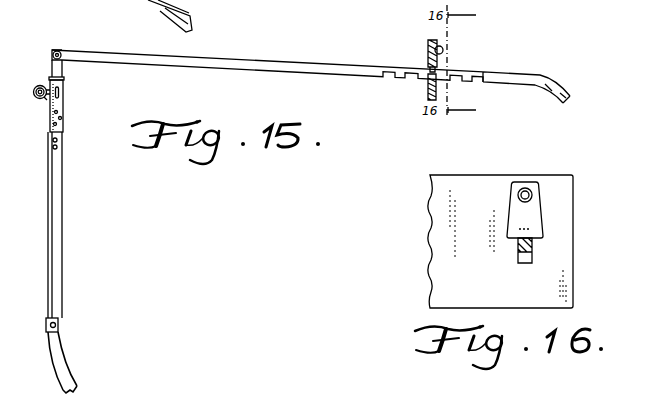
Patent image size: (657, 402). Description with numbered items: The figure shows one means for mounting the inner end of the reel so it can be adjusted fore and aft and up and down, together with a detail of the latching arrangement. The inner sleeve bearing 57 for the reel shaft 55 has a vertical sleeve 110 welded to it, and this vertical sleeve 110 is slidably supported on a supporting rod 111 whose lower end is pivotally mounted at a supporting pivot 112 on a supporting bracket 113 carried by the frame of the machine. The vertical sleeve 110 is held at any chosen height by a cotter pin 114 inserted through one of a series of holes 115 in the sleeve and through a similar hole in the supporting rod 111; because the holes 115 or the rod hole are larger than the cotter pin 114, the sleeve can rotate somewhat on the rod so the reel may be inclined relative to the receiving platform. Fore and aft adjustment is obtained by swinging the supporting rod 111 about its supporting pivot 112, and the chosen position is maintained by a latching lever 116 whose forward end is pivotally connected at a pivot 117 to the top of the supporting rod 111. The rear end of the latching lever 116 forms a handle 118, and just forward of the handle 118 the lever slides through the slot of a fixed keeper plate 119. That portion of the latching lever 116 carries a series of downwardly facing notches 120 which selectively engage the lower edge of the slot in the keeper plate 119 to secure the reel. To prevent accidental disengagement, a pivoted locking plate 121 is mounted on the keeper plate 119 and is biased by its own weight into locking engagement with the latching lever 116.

In FIG. 15, the reel shaft 55 is at (47, 83).
In FIG. 15, the inner sleeve bearing 57 is at (39, 100).
In FIG. 15, the vertical sleeve 110 is at (64, 106).
In FIG. 15, the supporting rod 111 is at (55, 239).
In FIG. 15, the supporting pivot 112 is at (57, 324).
In FIG. 15, the supporting bracket 113 is at (60, 352).
In FIG. 15, the cotter pin 114 is at (61, 89).
In FIG. 15, the holes 115 is at (58, 146).
In FIG. 15, the latching lever 116 is at (232, 62).
In FIG. 16, the latching lever 116 is at (533, 248).
In FIG. 15, the pivotal connection 117 is at (61, 52).
In FIG. 15, the handle 118 is at (564, 90).
In FIG. 15, the keeper plate 119 is at (427, 93).
In FIG. 15, the notches 120 is at (481, 74).
In FIG. 15, the locking plate 121 is at (441, 58).
In FIG. 16, the locking plate 121 is at (532, 220).